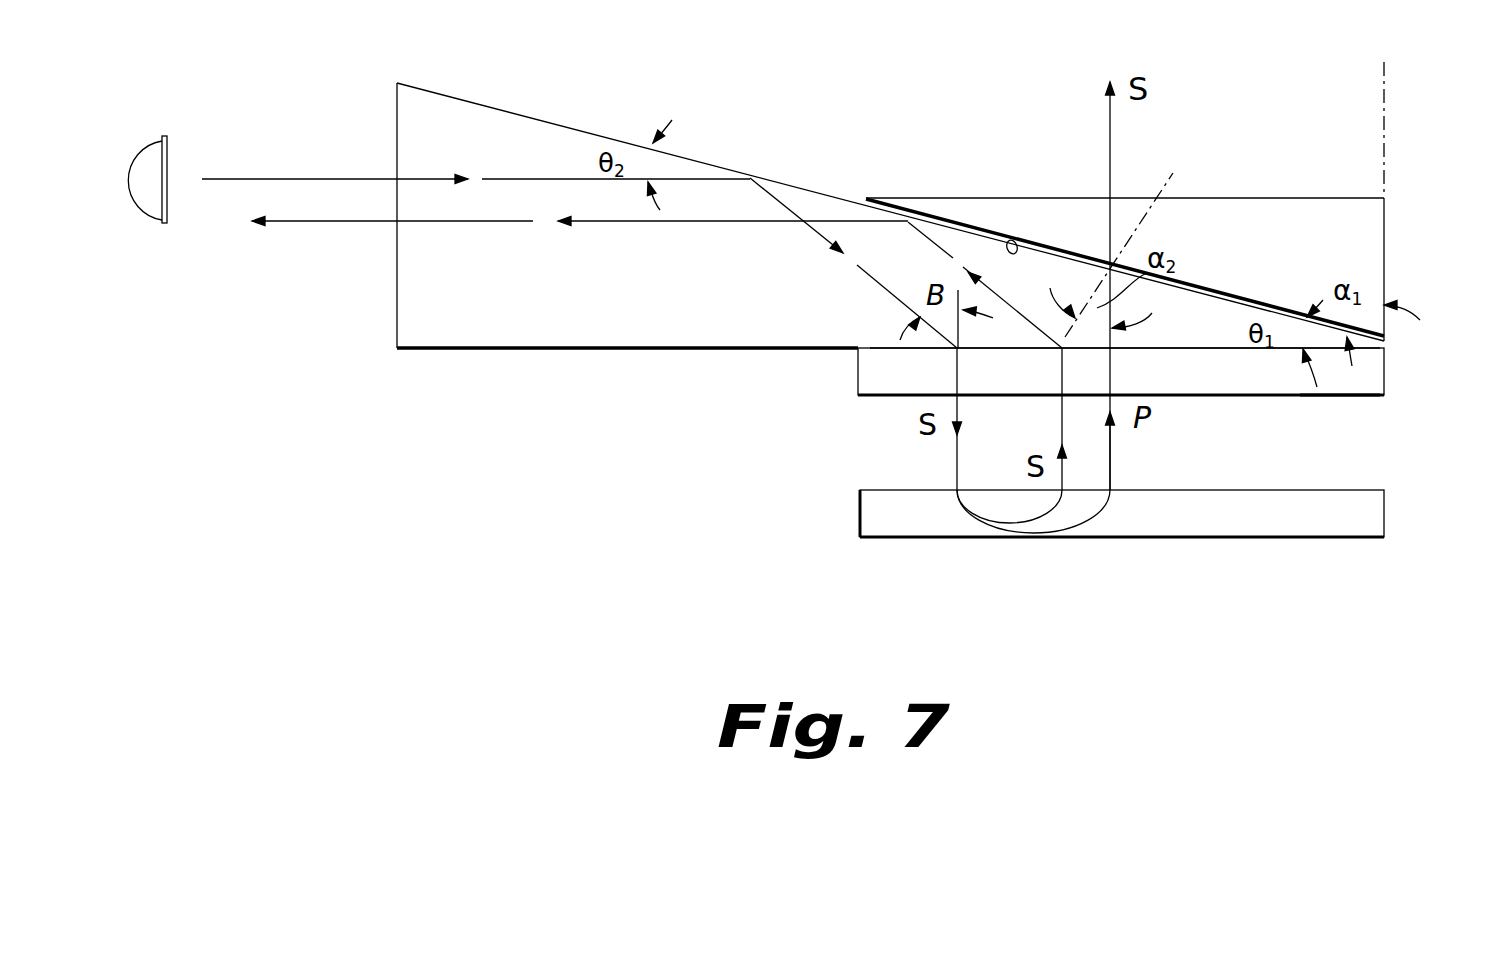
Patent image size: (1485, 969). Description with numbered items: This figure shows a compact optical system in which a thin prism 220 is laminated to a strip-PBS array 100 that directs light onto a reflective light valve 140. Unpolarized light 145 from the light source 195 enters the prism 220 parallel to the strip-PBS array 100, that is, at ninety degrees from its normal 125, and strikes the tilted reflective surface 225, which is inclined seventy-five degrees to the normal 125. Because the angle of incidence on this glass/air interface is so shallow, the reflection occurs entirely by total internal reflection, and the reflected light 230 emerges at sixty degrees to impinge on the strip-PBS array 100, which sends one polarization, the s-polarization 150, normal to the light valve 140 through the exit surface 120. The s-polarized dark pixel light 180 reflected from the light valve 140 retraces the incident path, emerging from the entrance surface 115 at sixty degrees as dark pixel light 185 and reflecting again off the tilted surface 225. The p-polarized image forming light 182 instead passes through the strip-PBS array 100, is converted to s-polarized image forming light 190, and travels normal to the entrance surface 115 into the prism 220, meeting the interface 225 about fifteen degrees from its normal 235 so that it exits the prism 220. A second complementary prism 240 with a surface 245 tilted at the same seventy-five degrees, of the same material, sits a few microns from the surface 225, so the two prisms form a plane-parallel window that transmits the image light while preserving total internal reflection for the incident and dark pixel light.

The strip-PBS array 100 is at (870, 373).
The entrance surface 115 is at (1215, 350).
The exit surface 120 is at (1360, 395).
The strip-PBS normal 125 is at (1383, 85).
The light valve 140 is at (897, 517).
The unpolarized light 145 is at (258, 178).
The s-polarization 150 is at (957, 462).
The s-polarized dark pixel light 180 is at (1062, 413).
The p-polarized image forming light 182 is at (1112, 450).
The dark pixel s-polarized light 185 is at (303, 224).
The s-polarized image forming light 190 is at (1108, 135).
The light source 195 is at (143, 195).
The prism 220 is at (480, 333).
The tilted reflective surface 225 is at (488, 107).
The reflected light 230 is at (785, 188).
The normal to the interface 235 is at (1160, 183).
The second complementary prism 240 is at (1360, 232).
The tilted surface of second prism 245 is at (1012, 240).